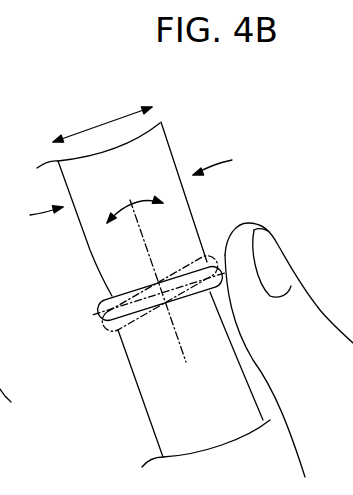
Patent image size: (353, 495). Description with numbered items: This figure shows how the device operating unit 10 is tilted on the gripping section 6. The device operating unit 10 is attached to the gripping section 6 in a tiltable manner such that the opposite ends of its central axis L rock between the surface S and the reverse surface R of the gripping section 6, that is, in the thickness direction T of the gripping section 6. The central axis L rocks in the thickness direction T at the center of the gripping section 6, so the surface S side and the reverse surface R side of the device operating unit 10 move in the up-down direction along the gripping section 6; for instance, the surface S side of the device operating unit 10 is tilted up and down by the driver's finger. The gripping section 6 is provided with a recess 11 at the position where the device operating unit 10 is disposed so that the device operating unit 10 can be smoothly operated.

The gripping section 6 is at (175, 162).
The device operating unit 10 is at (102, 318).
The recess 11 is at (108, 293).
The central axis L is at (146, 242).
The thickness direction T is at (102, 122).
The reverse surface R is at (36, 213).
The surface S is at (220, 161).